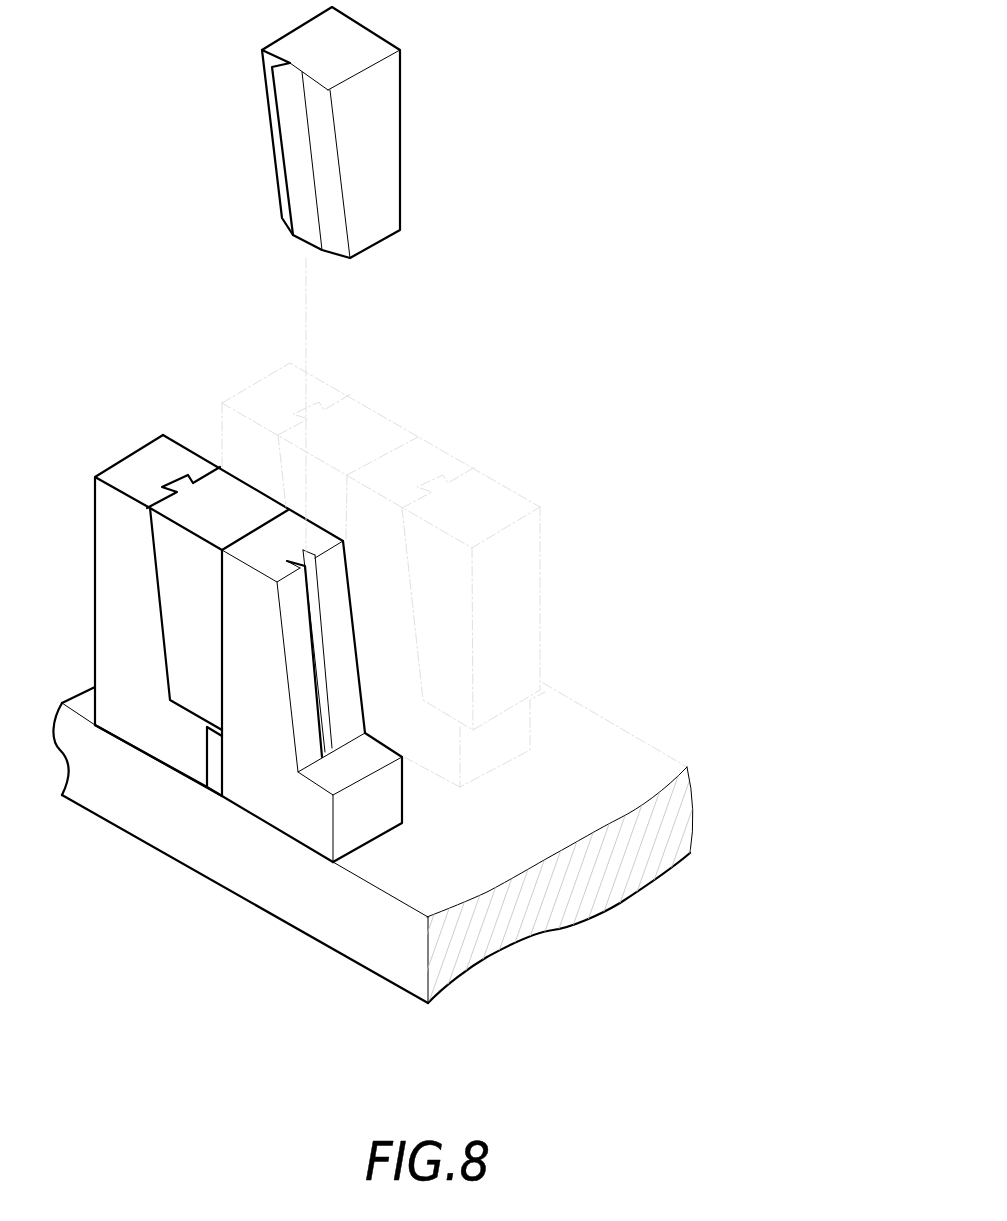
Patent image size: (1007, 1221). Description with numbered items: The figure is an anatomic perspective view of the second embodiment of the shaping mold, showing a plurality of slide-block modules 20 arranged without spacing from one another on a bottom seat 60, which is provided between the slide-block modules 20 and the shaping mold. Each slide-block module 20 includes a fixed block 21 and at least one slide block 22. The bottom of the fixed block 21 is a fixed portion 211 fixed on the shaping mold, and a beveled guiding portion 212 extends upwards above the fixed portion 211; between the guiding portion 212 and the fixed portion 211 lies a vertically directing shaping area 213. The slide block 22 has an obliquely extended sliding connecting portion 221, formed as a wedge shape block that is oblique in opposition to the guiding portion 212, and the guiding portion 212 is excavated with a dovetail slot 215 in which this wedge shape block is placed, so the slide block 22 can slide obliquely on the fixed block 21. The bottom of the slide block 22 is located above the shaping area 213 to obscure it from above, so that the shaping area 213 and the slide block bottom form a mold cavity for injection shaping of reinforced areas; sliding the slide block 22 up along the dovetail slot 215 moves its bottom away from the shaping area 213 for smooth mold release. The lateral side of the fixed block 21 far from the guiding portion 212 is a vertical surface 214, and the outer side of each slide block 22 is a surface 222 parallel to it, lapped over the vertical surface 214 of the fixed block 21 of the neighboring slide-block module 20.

The slide-block module 20 is at (385, 474).
The fixed block 21 is at (286, 640).
The slide block 22 is at (310, 368).
The bottom seat 60 is at (430, 856).
The fixed portion 211 is at (127, 743).
The guiding portion 212 is at (306, 688).
The shaping area 213 is at (205, 798).
The vertical surface 214 is at (93, 560).
The dovetail slot 215 is at (327, 723).
The sliding connecting portion 221 is at (292, 236).
The surface 222 is at (400, 117).